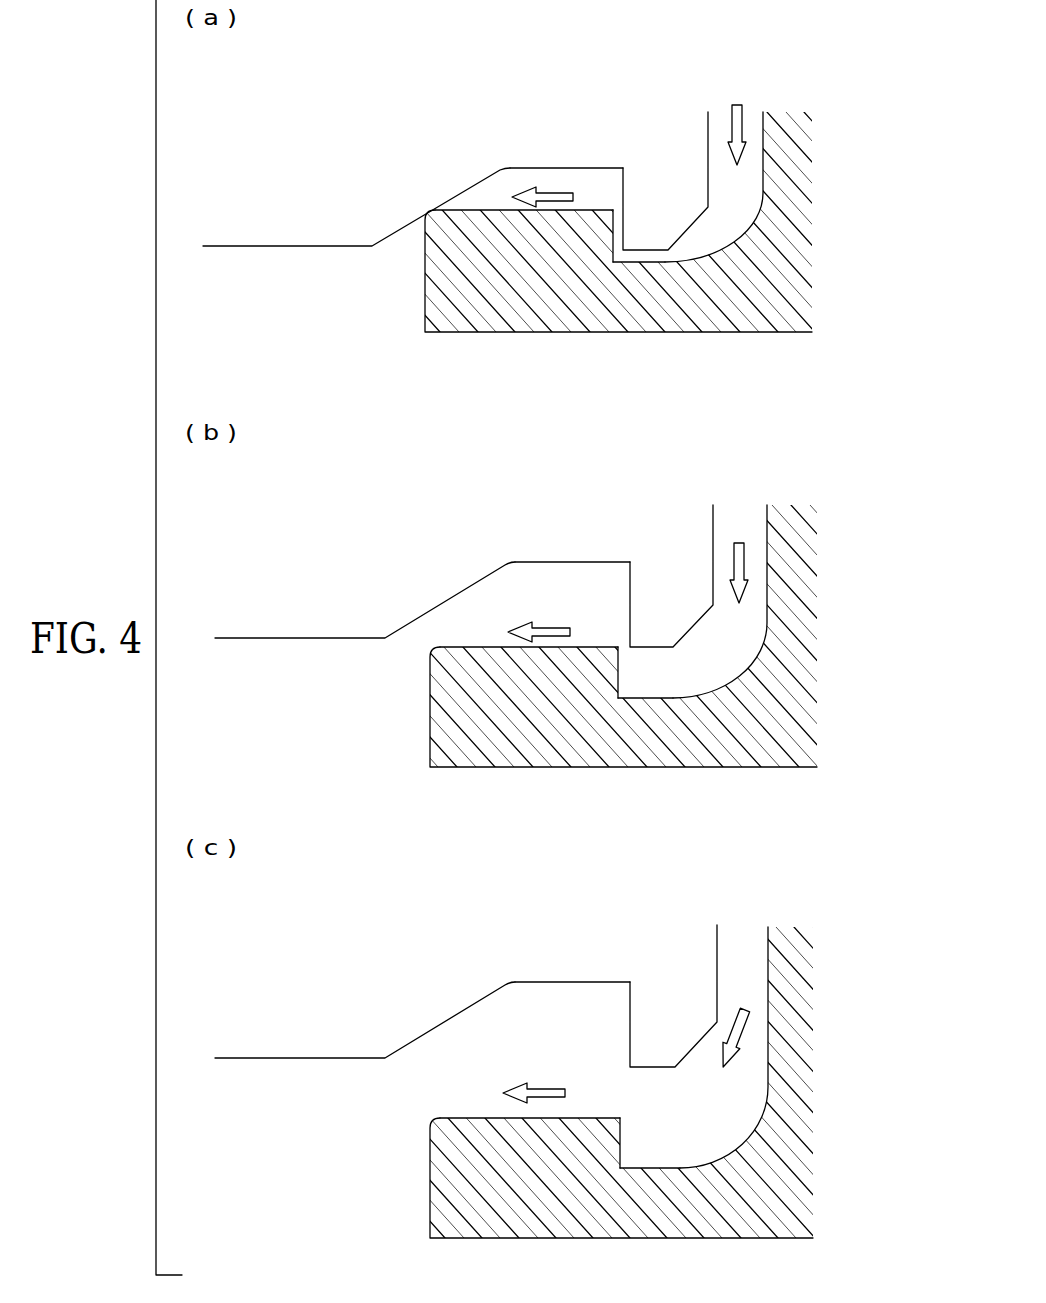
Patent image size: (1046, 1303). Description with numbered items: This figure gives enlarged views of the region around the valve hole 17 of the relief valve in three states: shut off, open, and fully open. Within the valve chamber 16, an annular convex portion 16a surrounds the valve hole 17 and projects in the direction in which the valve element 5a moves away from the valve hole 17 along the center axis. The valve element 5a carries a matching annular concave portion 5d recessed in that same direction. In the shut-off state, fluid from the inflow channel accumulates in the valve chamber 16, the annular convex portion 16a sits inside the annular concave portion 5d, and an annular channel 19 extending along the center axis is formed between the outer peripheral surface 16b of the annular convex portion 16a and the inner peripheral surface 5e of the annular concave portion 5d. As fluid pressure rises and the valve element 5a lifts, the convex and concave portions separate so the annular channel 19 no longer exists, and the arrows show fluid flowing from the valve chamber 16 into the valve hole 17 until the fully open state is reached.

The valve element 5a is at (437, 95).
The annular concave portion 5d is at (572, 182).
The inner peripheral surface 5e is at (624, 212).
The valve chamber 16 is at (750, 155).
The annular convex portion 16a is at (498, 228).
The outer peripheral surface 16b is at (616, 226).
The valve hole 17 is at (400, 262).
The annular channel 19 is at (622, 224).